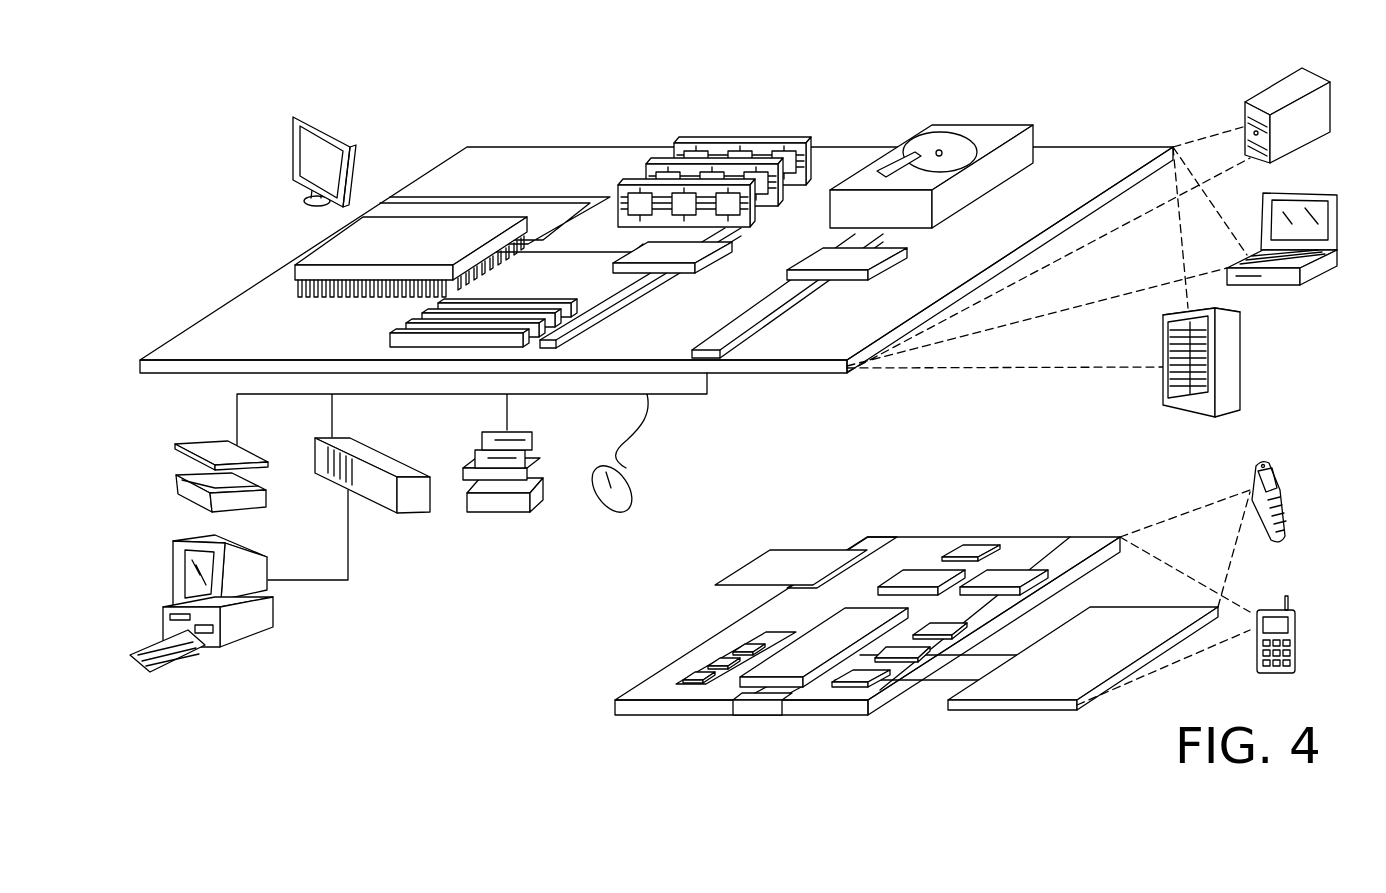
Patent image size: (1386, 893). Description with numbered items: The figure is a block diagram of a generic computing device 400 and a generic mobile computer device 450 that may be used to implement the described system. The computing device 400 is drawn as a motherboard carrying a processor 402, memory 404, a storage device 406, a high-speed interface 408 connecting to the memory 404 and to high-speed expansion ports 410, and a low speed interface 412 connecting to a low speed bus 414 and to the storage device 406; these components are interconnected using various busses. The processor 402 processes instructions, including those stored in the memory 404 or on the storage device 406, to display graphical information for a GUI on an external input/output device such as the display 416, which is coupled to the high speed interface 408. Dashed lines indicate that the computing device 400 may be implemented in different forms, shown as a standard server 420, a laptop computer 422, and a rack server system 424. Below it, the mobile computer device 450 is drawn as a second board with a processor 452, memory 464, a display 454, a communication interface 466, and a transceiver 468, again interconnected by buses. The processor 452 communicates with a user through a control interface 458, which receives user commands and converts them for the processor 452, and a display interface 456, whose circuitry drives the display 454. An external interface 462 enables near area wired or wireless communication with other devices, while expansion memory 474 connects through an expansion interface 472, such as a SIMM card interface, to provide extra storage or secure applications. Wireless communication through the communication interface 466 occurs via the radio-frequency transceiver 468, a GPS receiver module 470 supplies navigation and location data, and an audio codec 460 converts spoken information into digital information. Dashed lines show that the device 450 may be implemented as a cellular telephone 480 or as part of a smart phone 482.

The computing device 400 is at (414, 92).
The processor 402 is at (320, 247).
The memory 404 is at (752, 140).
The storage device 406 is at (972, 122).
The high-speed interface 408 is at (683, 251).
The high-speed expansion ports 410 is at (415, 320).
The low speed interface 412 is at (822, 258).
The low speed bus 414 is at (714, 346).
The display 416 is at (298, 115).
The standard server 420 is at (1263, 95).
The laptop computer 422 is at (1316, 192).
The rack server system 424 is at (1242, 360).
The mobile computer device 450 is at (570, 730).
The processor 452 is at (793, 653).
The display 454 is at (1122, 620).
The display interface 456 is at (887, 682).
The control interface 458 is at (907, 650).
The audio codec 460 is at (947, 622).
The external interface 462 is at (757, 704).
The memory 464 is at (713, 660).
The communication interface 466 is at (922, 568).
The transceiver 468 is at (1010, 570).
The GPS receiver module 470 is at (972, 547).
The expansion interface 472 is at (848, 548).
The expansion memory 474 is at (770, 548).
The cellular telephone 480 is at (1260, 463).
The smart phone 482 is at (1270, 610).